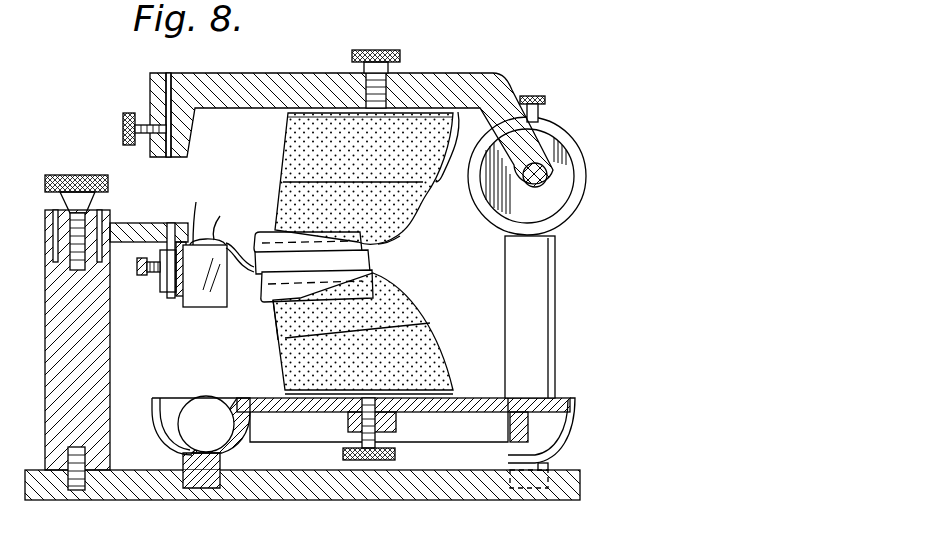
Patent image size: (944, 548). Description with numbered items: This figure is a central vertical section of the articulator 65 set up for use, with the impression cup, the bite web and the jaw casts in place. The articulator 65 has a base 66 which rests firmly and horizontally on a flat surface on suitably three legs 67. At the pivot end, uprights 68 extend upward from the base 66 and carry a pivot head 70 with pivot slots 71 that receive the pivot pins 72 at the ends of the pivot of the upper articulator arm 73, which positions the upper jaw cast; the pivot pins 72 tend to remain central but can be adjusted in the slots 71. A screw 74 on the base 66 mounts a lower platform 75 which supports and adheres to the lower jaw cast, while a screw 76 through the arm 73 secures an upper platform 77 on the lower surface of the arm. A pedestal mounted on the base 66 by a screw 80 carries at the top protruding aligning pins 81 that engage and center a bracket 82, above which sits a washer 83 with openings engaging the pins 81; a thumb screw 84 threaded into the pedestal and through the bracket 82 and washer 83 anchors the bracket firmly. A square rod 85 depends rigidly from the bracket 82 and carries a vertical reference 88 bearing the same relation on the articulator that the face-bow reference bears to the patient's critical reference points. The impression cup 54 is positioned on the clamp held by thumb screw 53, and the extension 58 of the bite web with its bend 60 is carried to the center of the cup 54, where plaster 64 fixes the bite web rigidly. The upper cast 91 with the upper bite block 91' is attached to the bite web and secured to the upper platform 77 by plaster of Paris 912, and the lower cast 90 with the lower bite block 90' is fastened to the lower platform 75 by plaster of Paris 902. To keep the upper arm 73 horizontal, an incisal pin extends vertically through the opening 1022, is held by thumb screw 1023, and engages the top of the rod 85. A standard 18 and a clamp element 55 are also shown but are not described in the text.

The base 66 is at (428, 490).
The standard 18 is at (100, 353).
The washer 83 is at (50, 215).
The aligning pins 81 is at (101, 228).
The thumb screw 84 is at (66, 182).
The screw 80 is at (76, 492).
The bracket 82 is at (150, 220).
The vertical reference 88 is at (171, 223).
The square rod 85 is at (172, 297).
The thumb screw 53 is at (143, 277).
The impression cup 54 is at (200, 308).
The extension 58 is at (233, 240).
The bend 60 is at (218, 216).
The plaster 64 is at (200, 211).
The clamp 55 is at (367, 262).
The upper cast 91 is at (364, 178).
The plaster of Paris 912 is at (292, 155).
The upper bite block 91' is at (420, 239).
The lower cast 90 is at (350, 333).
The lower bite block 90' is at (258, 322).
The plaster of Paris 902 is at (428, 346).
The lower platform 75 is at (452, 396).
The screw 74 is at (368, 461).
The legs 67 is at (548, 467).
The uprights 68 is at (555, 338).
The articulator 65 is at (566, 307).
The pivot head 70 is at (542, 200).
The pivot slots 71 is at (560, 160).
The pivot pins 72 is at (533, 188).
The upper articulator arm 73 is at (450, 78).
The screw 76 is at (382, 52).
The upper platform 77 is at (450, 153).
The opening 1022 is at (172, 73).
The thumb screw 1023 is at (129, 115).